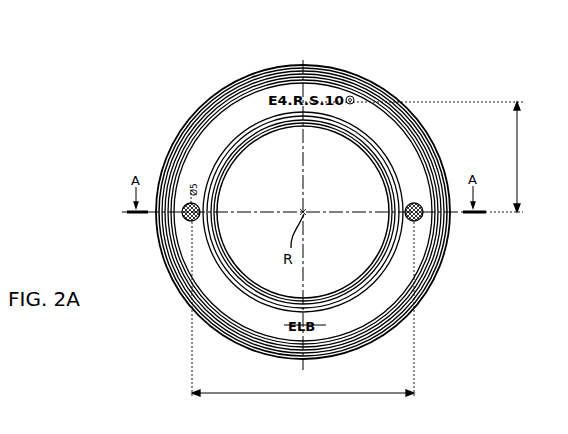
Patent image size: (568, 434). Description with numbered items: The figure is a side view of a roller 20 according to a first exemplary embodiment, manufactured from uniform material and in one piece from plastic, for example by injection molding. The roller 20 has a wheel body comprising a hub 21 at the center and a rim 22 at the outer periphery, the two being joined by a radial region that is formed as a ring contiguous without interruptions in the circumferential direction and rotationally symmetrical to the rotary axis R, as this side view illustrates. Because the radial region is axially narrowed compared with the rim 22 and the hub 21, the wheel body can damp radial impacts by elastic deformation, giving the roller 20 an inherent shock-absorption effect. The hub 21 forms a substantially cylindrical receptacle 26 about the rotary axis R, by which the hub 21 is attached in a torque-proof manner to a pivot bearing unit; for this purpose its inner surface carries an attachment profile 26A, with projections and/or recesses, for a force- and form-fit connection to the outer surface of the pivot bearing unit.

The roller 20 is at (205, 80).
The hub 21 is at (347, 130).
The rim 22 is at (371, 80).
The receptacle 26 is at (273, 191).
The attachment profile 26A is at (250, 276).